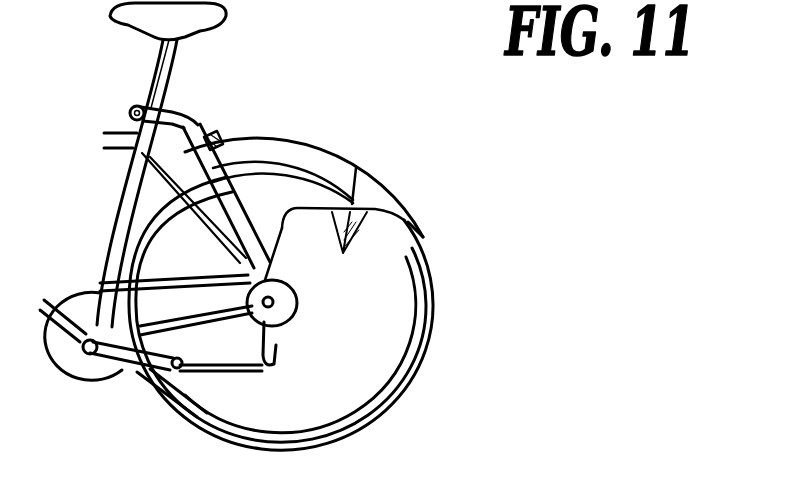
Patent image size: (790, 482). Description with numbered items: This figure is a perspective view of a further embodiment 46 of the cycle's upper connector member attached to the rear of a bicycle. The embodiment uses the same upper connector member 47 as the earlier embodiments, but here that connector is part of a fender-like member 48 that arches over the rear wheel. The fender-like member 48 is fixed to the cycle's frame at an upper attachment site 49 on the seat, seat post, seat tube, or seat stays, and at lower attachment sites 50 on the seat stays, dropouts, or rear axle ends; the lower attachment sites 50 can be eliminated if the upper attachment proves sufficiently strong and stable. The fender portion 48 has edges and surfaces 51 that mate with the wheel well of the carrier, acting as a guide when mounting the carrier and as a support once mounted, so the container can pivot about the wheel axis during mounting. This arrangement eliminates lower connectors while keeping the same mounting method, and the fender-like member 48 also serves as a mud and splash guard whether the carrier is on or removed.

The further embodiment of the cycle's upper connector member 46 is at (380, 133).
The upper connector member 47 is at (223, 138).
The fender-like member 48 is at (325, 172).
The upper attachment site 49 is at (134, 110).
The lower attachment sites 50 is at (258, 282).
The edges and surfaces 51 is at (347, 248).